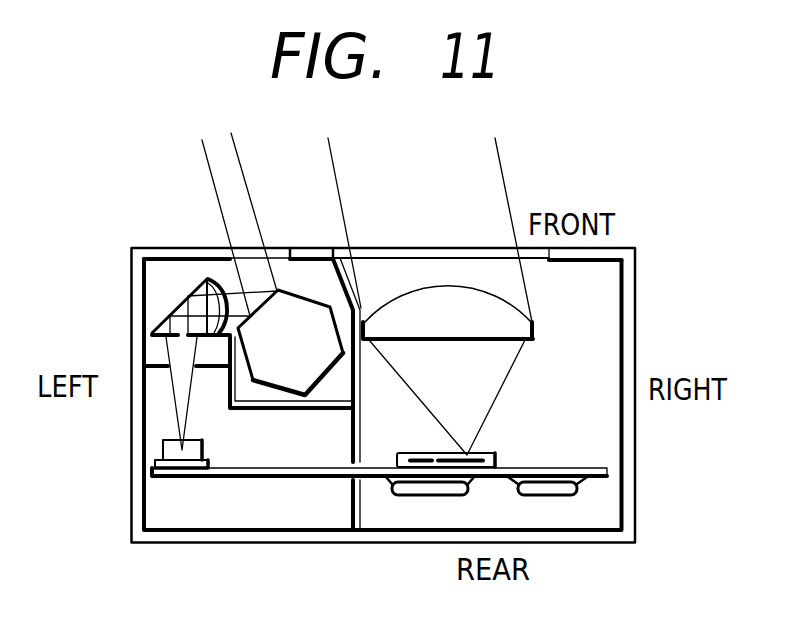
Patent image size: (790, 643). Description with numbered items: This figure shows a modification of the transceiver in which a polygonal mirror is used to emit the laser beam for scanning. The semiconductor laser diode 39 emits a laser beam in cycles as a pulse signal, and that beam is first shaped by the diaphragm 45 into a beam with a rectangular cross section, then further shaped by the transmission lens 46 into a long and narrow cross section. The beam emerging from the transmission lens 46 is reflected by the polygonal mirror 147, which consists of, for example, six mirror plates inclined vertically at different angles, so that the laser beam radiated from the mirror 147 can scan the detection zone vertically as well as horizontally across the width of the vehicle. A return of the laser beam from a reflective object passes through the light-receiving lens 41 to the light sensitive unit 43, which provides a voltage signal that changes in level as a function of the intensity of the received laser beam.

The semiconductor laser diode 39 is at (203, 450).
The light-receiving lens 41 is at (507, 301).
The light sensitive unit 43 is at (468, 455).
The diaphragm 45 is at (154, 337).
The transmission lens 46 is at (209, 279).
The polygonal mirror 147 is at (322, 384).